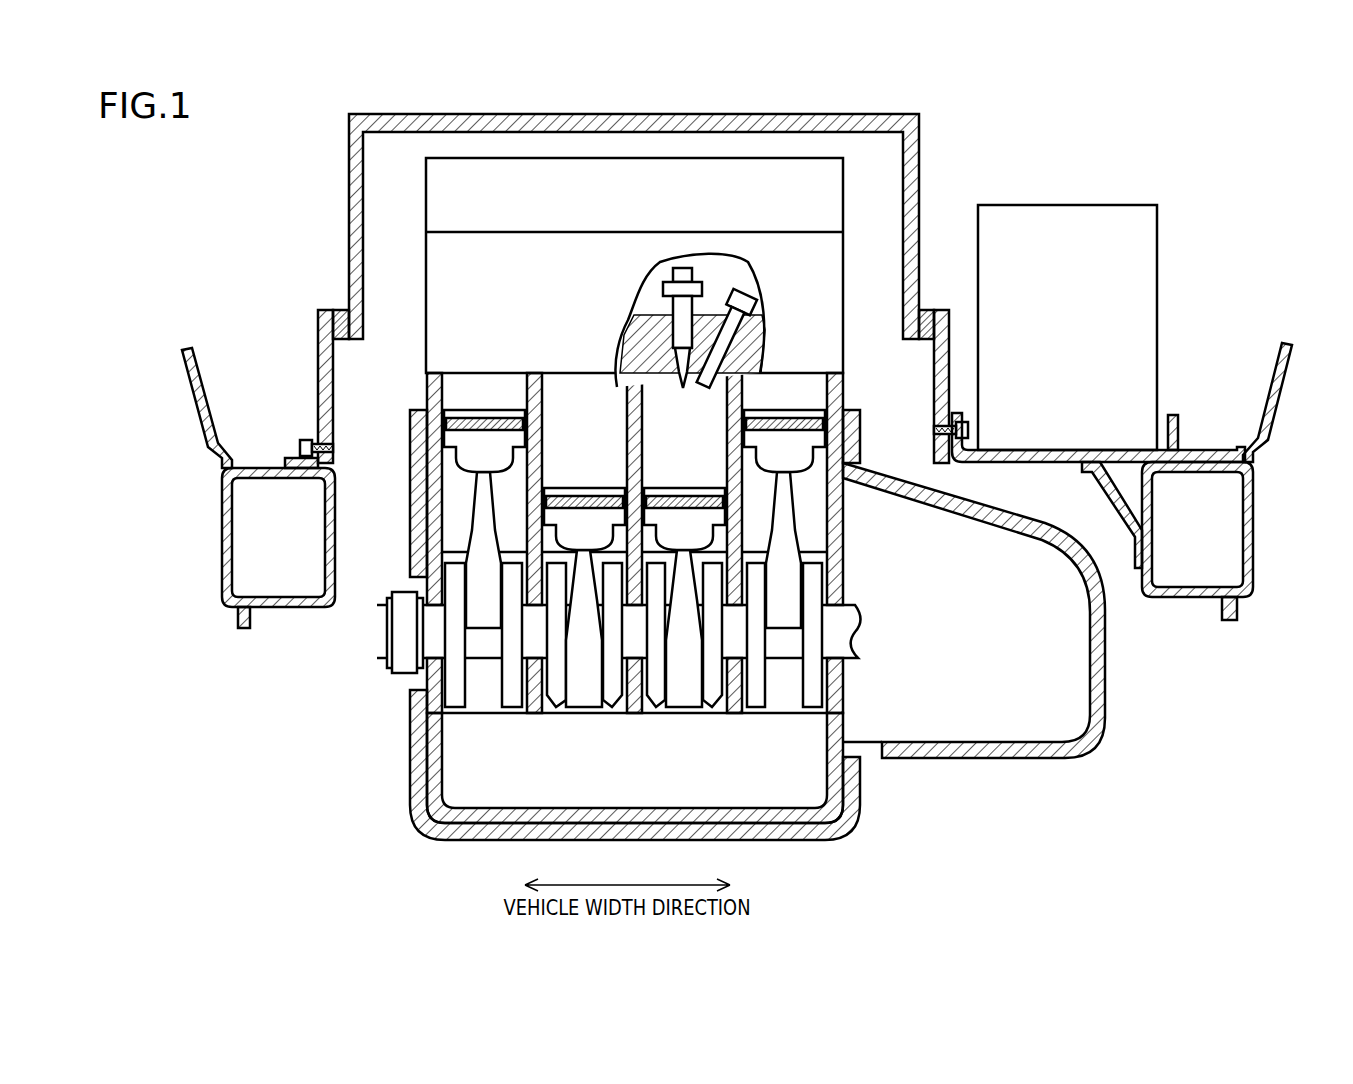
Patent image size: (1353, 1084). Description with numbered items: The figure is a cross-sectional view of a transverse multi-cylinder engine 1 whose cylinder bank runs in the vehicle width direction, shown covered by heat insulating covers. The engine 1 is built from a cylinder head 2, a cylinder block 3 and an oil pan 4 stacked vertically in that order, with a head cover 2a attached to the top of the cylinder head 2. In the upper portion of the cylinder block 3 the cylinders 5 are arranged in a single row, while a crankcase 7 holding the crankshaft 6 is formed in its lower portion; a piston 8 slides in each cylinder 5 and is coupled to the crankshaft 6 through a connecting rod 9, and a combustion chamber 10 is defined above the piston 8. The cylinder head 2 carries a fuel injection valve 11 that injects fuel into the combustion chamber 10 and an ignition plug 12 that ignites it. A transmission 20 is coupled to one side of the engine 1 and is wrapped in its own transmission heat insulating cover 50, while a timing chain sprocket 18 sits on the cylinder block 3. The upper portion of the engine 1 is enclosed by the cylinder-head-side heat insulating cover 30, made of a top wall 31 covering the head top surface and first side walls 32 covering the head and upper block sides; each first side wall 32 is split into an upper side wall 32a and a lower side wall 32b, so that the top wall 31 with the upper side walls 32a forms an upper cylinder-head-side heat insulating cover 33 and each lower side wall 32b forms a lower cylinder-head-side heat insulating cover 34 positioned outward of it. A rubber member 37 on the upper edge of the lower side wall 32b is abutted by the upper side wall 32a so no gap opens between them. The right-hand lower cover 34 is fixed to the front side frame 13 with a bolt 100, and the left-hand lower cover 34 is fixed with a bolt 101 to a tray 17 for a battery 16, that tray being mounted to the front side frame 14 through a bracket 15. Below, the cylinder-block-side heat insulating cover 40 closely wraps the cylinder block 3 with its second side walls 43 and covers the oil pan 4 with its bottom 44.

The engine 1 is at (972, 129).
The cylinder head 2 is at (660, 265).
The head cover 2a is at (828, 201).
The cylinder block 3 is at (427, 478).
The oil pan 4 is at (474, 816).
The cylinder 5 is at (518, 380).
The crankshaft 6 is at (425, 640).
The crankcase 7 is at (455, 680).
The piston 8 is at (462, 462).
The connecting rod 9 is at (492, 556).
The combustion chamber 10 is at (470, 405).
The fuel injection valve 11 is at (668, 282).
The ignition plug 12 is at (742, 298).
The front side frame 13 is at (285, 634).
The front side frame 14 is at (1187, 624).
The bracket 15 is at (1118, 520).
The battery 16 is at (1157, 285).
The tray 17 is at (1178, 432).
The timing chain sprocket 18 is at (402, 598).
The transmission 20 is at (974, 639).
The cylinder-head-side heat insulating cover 30 is at (658, 346).
The top wall 31 is at (382, 114).
The first side wall 32 is at (661, 275).
The upper side wall 32a is at (919, 176).
The lower side wall 32b is at (949, 372).
The upper cylinder-head-side heat insulating cover 33 is at (944, 274).
The lower cylinder-head-side heat insulating cover 34 is at (960, 311).
The rubber member 37 is at (343, 342).
The cylinder-block-side heat insulating cover 40 is at (598, 653).
The second side wall 43 is at (410, 520).
The bottom 44 is at (772, 832).
The transmission heat insulating cover 50 is at (1030, 526).
The bolt 100 is at (300, 450).
The bolt 101 is at (970, 430).